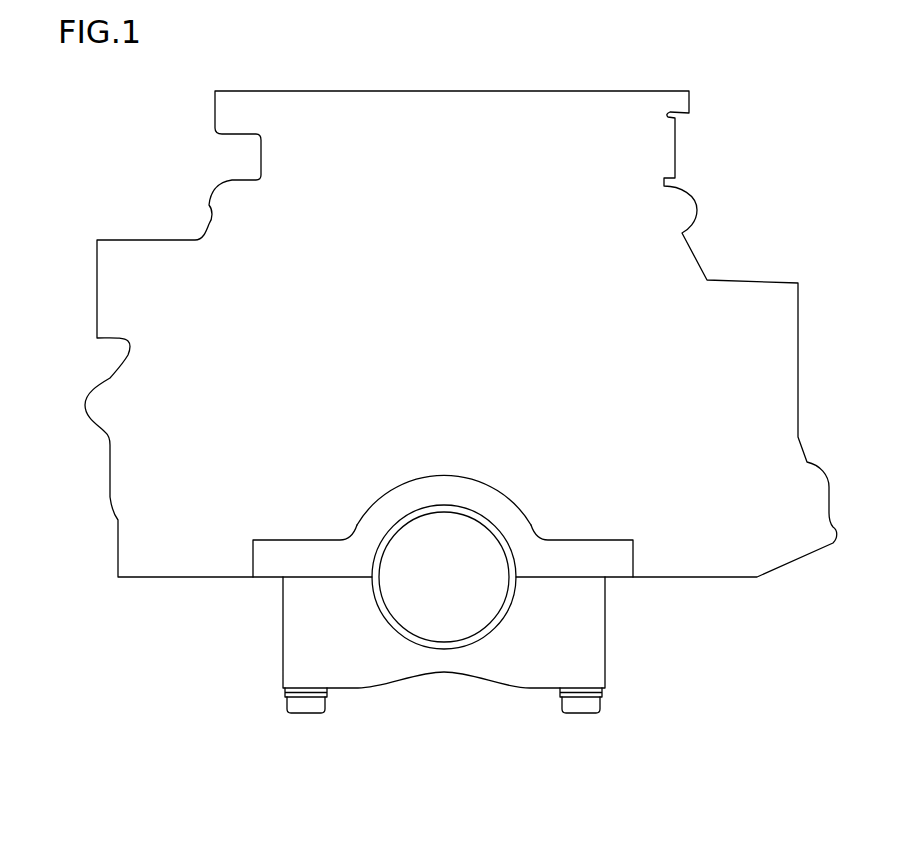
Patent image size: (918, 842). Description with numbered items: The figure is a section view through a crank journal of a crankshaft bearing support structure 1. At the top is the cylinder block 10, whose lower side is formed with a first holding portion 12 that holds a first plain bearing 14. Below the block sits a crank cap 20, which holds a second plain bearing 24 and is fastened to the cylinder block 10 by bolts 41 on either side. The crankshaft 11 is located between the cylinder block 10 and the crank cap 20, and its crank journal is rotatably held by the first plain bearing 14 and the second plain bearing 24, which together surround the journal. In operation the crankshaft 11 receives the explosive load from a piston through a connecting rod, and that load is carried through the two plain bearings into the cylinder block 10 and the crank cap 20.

The crankshaft bearing support structure 1 is at (762, 97).
The cylinder block 10 is at (373, 105).
The crankshaft 11 is at (443, 602).
The first holding portion 12 is at (368, 538).
The first plain bearing 14 is at (508, 548).
The crank cap 20 is at (352, 692).
The second plain bearing 24 is at (482, 624).
The bolts 41 is at (303, 713).